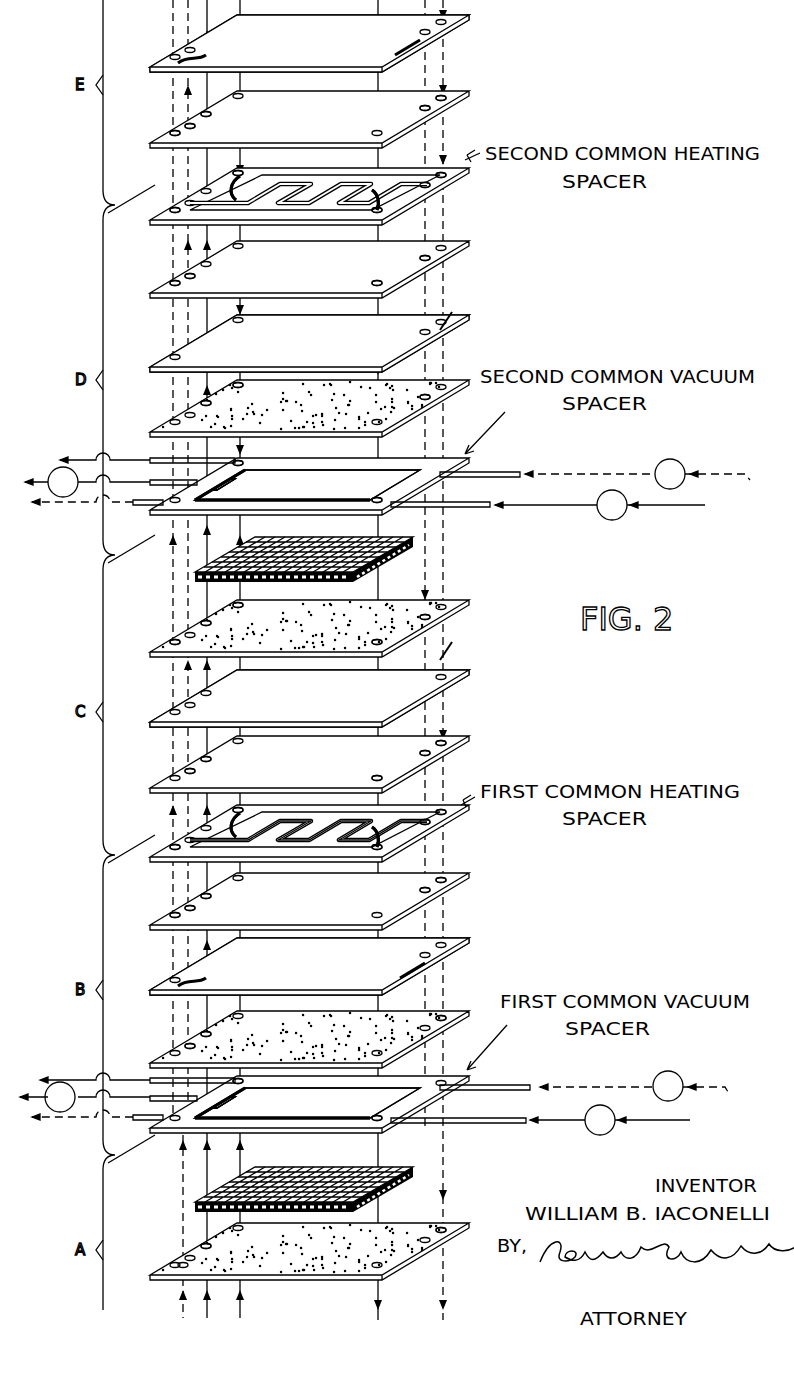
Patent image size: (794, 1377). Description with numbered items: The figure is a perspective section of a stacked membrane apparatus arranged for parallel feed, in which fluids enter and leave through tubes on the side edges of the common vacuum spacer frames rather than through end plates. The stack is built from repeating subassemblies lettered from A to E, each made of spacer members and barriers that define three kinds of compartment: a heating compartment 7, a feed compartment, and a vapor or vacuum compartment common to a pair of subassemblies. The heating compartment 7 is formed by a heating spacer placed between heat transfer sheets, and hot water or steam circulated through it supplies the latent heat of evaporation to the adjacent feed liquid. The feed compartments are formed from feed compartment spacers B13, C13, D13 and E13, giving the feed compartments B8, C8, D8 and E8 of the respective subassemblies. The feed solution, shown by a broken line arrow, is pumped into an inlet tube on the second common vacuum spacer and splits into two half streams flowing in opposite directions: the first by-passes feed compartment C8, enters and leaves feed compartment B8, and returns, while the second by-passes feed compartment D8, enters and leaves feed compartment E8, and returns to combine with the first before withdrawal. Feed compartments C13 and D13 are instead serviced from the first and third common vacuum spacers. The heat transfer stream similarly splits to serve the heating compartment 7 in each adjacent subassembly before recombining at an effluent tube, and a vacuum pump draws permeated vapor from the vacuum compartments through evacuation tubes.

The heating compartment 7 is at (285, 848).
The feed compartment of subassembly E E8 is at (385, 30).
The feed compartment of subassembly D D8 is at (370, 330).
The feed compartment of subassembly C C8 is at (360, 690).
The feed compartment of subassembly B B8 is at (290, 948).
The feed compartment spacer of subassembly E E13 is at (170, 66).
The feed compartment spacer of subassembly D D13 is at (170, 362).
The feed compartment spacer of subassembly C C13 is at (160, 719).
The feed compartment spacer of subassembly B B13 is at (160, 990).